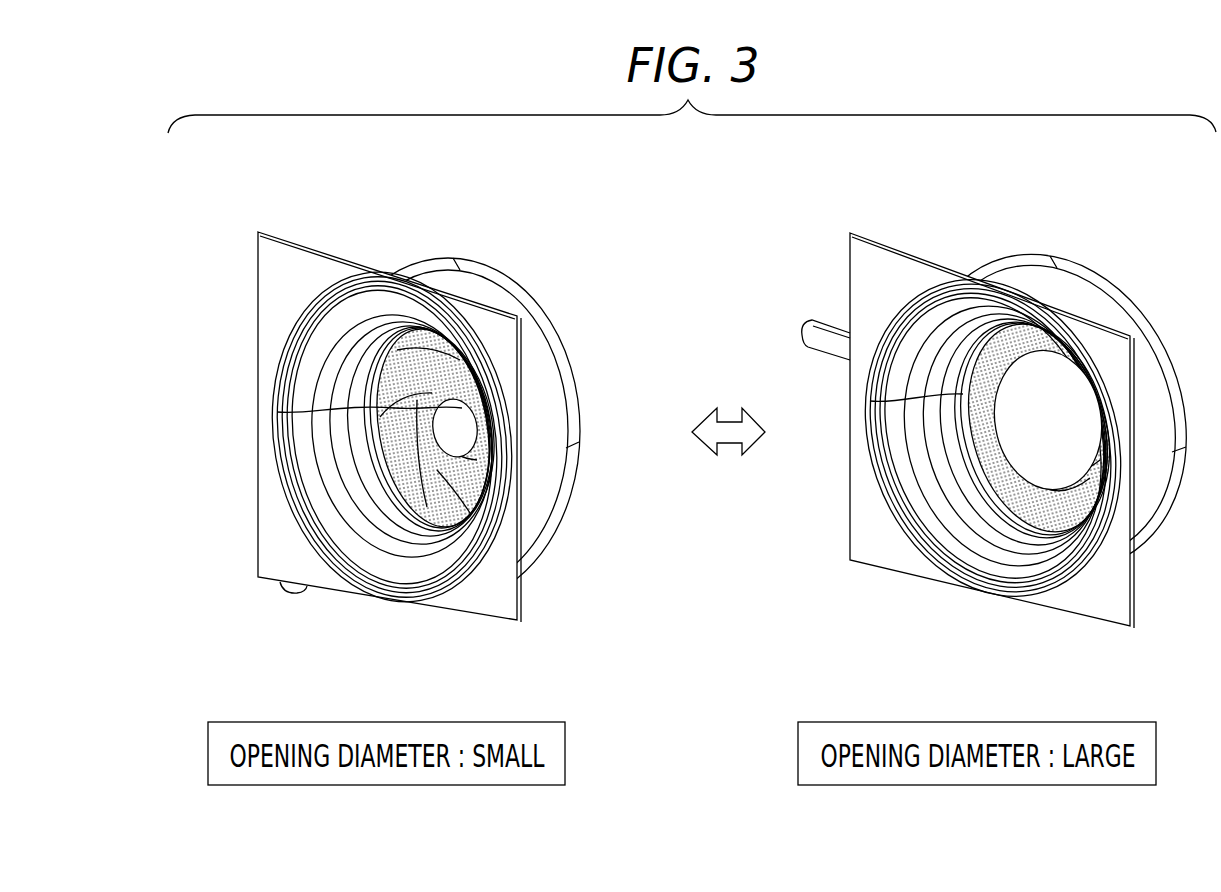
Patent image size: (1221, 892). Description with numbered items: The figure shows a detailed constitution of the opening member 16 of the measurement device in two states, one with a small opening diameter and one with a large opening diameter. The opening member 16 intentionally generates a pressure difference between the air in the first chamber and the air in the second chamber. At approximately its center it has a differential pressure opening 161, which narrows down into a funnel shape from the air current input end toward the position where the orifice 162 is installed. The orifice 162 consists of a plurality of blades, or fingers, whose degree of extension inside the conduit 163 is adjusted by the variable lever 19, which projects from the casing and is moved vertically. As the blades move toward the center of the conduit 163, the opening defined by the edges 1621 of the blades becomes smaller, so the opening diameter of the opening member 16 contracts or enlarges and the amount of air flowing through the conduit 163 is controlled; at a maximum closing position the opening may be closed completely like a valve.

The opening member 16 is at (482, 226).
The differential pressure opening 161 is at (343, 458).
The orifice 162 is at (427, 517).
The edges 1621 is at (462, 408).
The conduit 163 is at (533, 378).
The variable lever 19 is at (288, 592).